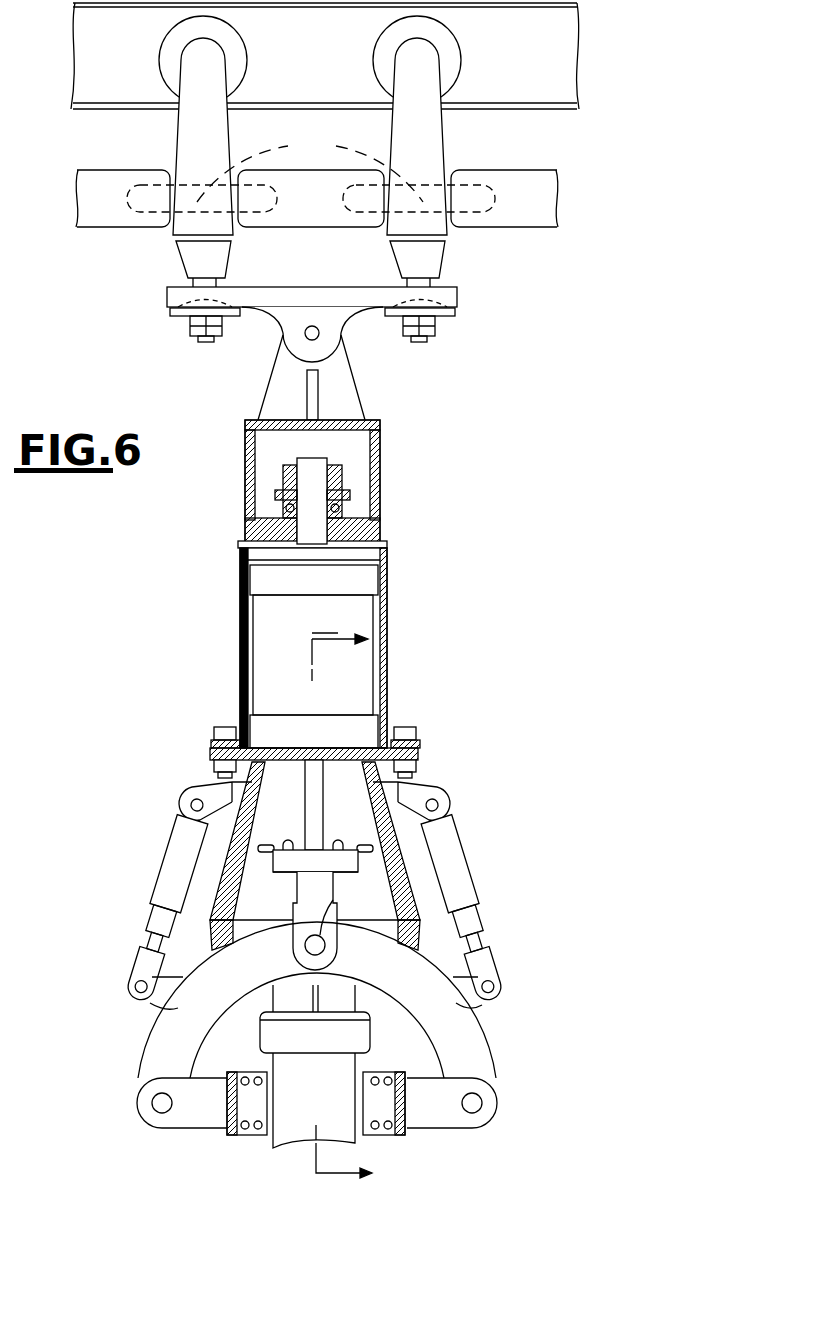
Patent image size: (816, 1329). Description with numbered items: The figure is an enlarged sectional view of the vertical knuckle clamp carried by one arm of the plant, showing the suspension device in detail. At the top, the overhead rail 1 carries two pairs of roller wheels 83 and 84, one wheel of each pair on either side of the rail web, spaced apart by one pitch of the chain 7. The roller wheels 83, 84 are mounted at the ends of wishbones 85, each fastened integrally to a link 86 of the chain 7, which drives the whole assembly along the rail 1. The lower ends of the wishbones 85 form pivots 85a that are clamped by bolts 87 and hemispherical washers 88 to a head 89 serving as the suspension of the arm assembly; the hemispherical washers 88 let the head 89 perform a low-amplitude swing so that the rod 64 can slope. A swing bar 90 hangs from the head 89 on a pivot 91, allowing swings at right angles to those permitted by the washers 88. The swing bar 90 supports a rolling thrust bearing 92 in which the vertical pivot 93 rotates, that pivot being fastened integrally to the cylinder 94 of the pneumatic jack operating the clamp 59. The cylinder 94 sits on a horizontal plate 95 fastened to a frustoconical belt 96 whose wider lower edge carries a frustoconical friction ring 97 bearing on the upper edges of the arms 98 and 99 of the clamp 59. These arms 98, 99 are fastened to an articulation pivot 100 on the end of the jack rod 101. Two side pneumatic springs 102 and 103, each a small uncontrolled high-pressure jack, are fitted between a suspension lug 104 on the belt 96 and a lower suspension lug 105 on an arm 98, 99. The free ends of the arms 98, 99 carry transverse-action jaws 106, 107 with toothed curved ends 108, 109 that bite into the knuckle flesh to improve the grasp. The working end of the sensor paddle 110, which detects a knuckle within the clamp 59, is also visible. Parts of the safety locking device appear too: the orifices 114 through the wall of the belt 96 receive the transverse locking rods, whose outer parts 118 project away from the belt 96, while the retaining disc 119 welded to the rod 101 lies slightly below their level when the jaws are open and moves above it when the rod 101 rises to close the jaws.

The overhead rail 1 is at (553, 52).
The chain 7 is at (118, 237).
The clamp 59 is at (333, 1051).
The rod 64 is at (316, 1092).
The roller wheel 83 is at (165, 62).
The roller wheel 84 is at (388, 62).
The wishbone 85 is at (195, 135).
The pivot 85a is at (207, 342).
The link 86 is at (310, 164).
The bolt 87 is at (197, 330).
The hemispherical washer 88 is at (175, 312).
The head 89 is at (322, 302).
The swing bar 90 is at (382, 448).
The pivot 91 is at (322, 333).
The rolling thrust bearing 92 is at (345, 498).
The pivot 93 is at (312, 478).
The cylinder 94 is at (355, 680).
The horizontal plate 95 is at (425, 755).
The frustoconical belt 96 is at (398, 867).
The frustoconical friction ring 97 is at (422, 935).
The arm 98 is at (172, 1030).
The arm 99 is at (468, 1057).
The articulation pivot 100 is at (334, 900).
The rod 101 is at (318, 800).
The side pneumatic spring 102 is at (185, 835).
The side pneumatic spring 103 is at (445, 835).
The suspension lug 104 is at (410, 790).
The lower suspension lug 105 is at (465, 985).
The transverse-action jaw 106 is at (200, 1110).
The transverse-action jaw 107 is at (437, 1105).
The curved end 108 is at (250, 1130).
The curved end 109 is at (385, 1130).
The paddle 110 is at (345, 1040).
The orifice 114 is at (288, 845).
The part 118 is at (265, 850).
The retaining disc 119 is at (283, 866).